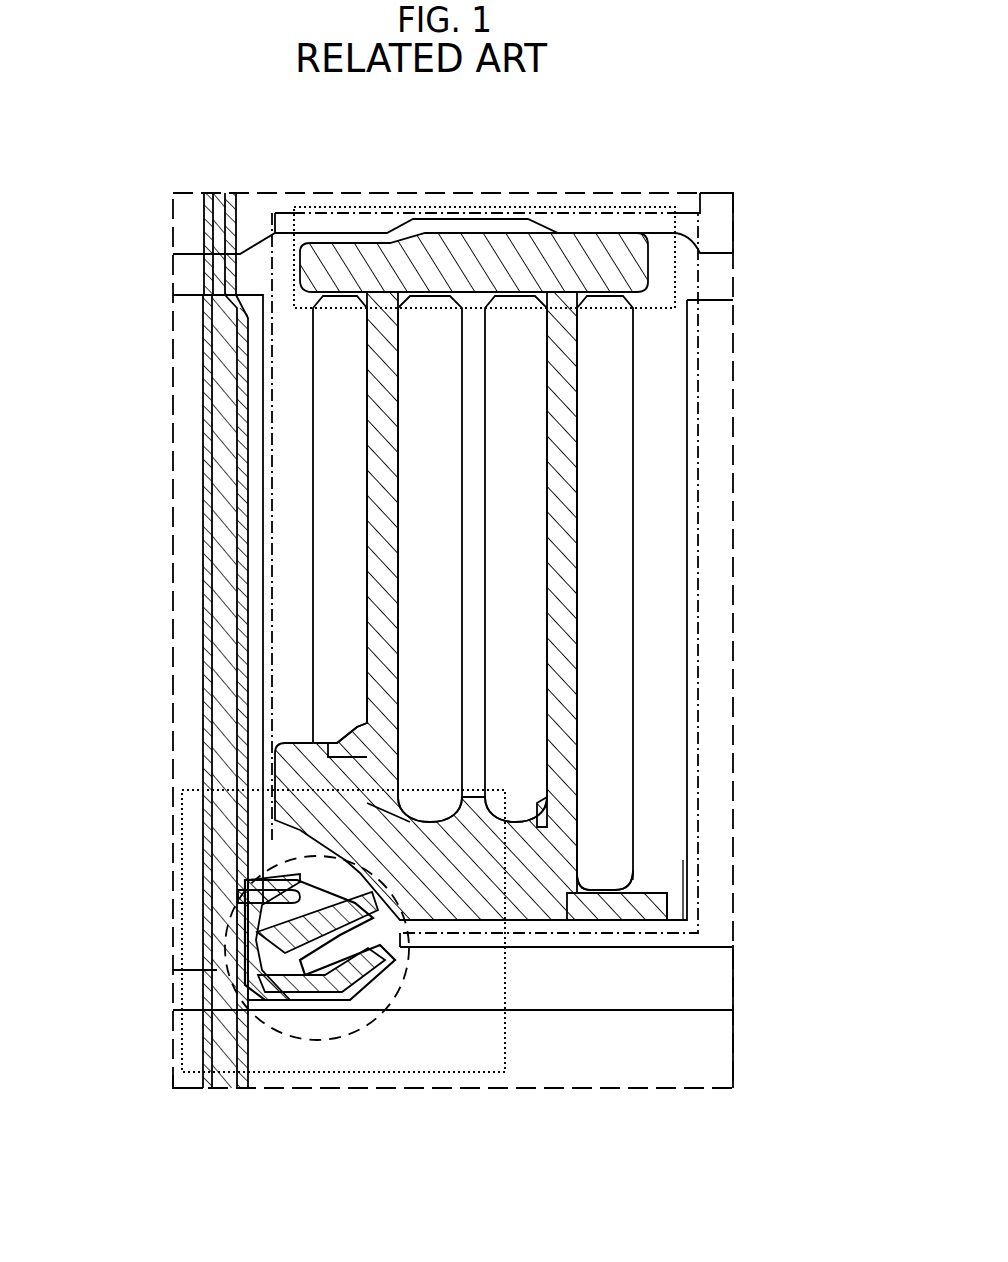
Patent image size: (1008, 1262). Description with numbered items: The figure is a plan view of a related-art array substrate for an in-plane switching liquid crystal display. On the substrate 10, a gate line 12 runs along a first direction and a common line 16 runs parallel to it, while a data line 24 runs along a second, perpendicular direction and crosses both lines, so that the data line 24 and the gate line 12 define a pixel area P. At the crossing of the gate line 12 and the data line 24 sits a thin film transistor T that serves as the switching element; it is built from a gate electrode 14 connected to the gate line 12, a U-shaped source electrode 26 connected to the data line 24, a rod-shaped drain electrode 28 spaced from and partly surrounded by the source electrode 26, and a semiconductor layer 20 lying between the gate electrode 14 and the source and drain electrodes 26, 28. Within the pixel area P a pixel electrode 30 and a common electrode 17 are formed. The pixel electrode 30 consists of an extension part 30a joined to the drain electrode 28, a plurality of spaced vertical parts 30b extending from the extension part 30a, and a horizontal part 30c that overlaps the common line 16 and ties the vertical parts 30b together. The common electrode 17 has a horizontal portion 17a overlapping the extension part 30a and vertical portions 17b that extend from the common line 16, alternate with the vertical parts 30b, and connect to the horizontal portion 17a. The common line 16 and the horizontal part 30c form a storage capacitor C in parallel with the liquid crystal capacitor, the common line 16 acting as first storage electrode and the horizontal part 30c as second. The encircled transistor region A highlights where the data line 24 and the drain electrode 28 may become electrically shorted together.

The substrate 10 is at (733, 343).
The gate line 12 is at (620, 1013).
The gate electrode 14 is at (290, 862).
The common line 16 is at (700, 253).
The common electrode 17 is at (838, 870).
The horizontal portion 17a is at (650, 923).
The vertical portions 17b is at (668, 871).
The semiconductor layer 20 is at (388, 958).
The data line 24 is at (205, 578).
The source electrode 26 is at (317, 985).
The drain electrode 28 is at (348, 975).
The pixel electrode 30 is at (812, 717).
The extension part 30a is at (640, 875).
The vertical parts 30b is at (585, 768).
The horizontal part 30c is at (620, 243).
The thin film transistor region A is at (508, 978).
The thin film transistor T is at (217, 922).
The storage capacitor c is at (532, 205).
The pixel area p is at (697, 517).